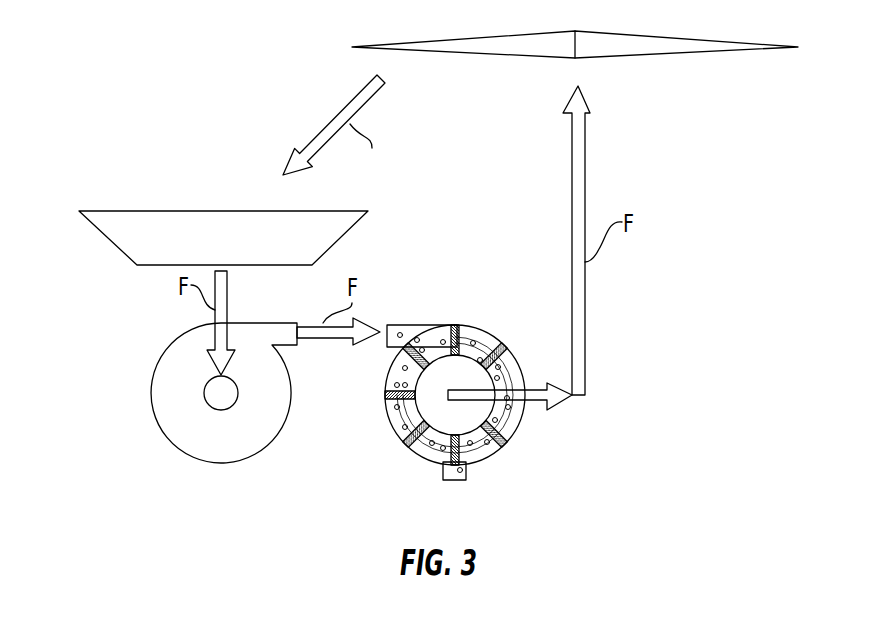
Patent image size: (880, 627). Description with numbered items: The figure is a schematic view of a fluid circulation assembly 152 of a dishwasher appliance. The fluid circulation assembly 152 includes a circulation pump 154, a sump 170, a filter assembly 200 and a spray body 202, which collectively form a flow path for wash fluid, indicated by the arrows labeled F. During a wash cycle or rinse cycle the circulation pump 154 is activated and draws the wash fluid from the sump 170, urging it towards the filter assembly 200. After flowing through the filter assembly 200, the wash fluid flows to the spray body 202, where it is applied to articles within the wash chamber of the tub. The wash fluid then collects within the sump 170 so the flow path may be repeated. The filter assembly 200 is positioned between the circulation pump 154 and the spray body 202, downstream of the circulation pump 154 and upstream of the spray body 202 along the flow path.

The fluid circulation assembly 152 is at (212, 87).
The sump 170 is at (108, 238).
The circulation pump 154 is at (185, 452).
The filter assembly 200 is at (498, 451).
The spray body 202 is at (660, 57).